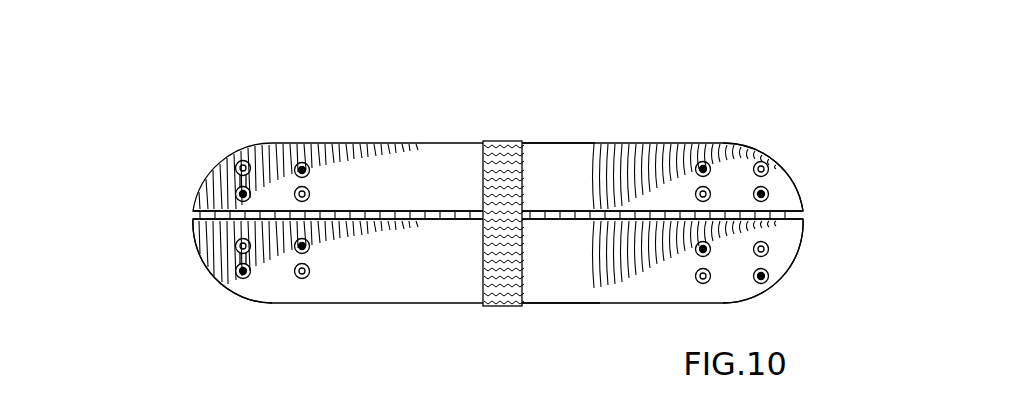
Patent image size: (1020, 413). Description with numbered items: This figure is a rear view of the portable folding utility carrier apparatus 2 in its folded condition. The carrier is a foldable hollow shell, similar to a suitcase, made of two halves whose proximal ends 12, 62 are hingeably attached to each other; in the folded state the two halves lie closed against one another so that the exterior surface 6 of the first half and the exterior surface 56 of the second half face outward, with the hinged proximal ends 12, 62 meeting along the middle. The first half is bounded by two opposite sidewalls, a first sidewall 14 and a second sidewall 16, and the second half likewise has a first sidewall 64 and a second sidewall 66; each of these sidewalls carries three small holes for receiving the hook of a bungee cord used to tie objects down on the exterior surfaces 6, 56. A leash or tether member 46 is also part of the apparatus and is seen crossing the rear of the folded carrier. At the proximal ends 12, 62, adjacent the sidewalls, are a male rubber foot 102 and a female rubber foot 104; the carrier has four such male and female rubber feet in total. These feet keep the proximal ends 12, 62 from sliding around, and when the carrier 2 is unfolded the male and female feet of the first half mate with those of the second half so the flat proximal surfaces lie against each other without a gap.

The portable folding utility carrier apparatus 2 is at (398, 58).
The exterior surface 6 is at (570, 305).
The proximal end 12 is at (405, 280).
The first sidewall 14 is at (797, 258).
The second sidewall 16 is at (200, 258).
The leash or tether member 46 is at (500, 306).
The exterior surface 56 is at (554, 143).
The proximal end 62 is at (425, 180).
The first sidewall 64 is at (797, 185).
The second sidewall 66 is at (192, 208).
The male rubber foot 102 is at (237, 162).
The female rubber foot 104 is at (236, 192).